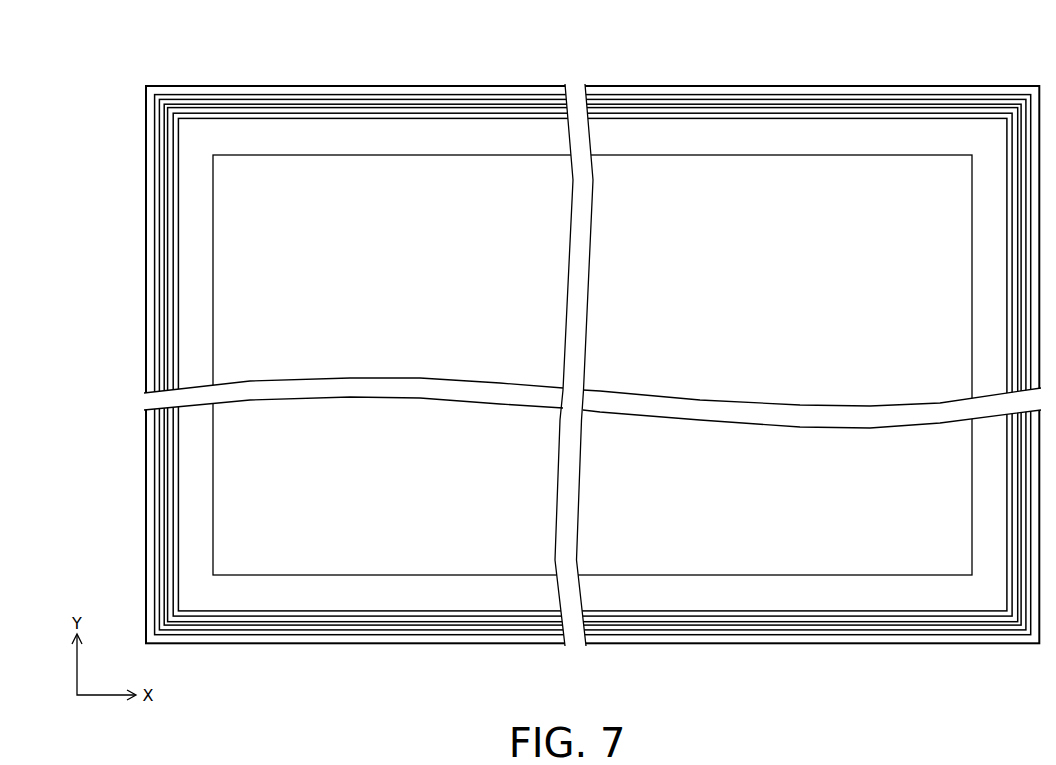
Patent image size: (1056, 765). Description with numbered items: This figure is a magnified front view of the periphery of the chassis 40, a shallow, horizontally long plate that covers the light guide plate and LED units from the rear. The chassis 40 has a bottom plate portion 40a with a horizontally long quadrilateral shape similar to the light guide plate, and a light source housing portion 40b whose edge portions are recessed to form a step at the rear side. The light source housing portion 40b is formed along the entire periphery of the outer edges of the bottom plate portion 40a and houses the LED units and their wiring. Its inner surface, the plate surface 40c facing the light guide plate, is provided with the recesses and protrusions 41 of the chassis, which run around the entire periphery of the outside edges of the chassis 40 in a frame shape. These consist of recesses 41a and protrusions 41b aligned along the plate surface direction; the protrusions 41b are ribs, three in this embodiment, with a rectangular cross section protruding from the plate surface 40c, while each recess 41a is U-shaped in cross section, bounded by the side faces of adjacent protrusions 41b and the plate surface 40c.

The chassis 40 is at (592, 324).
The bottom plate portion 40a is at (651, 218).
The light source housing portion 40b is at (746, 135).
The plate surface 40c is at (496, 137).
The recesses and protrusions of the chassis 41 is at (592, 322).
The recesses 41a is at (330, 110).
The protrusions 41b is at (297, 41).